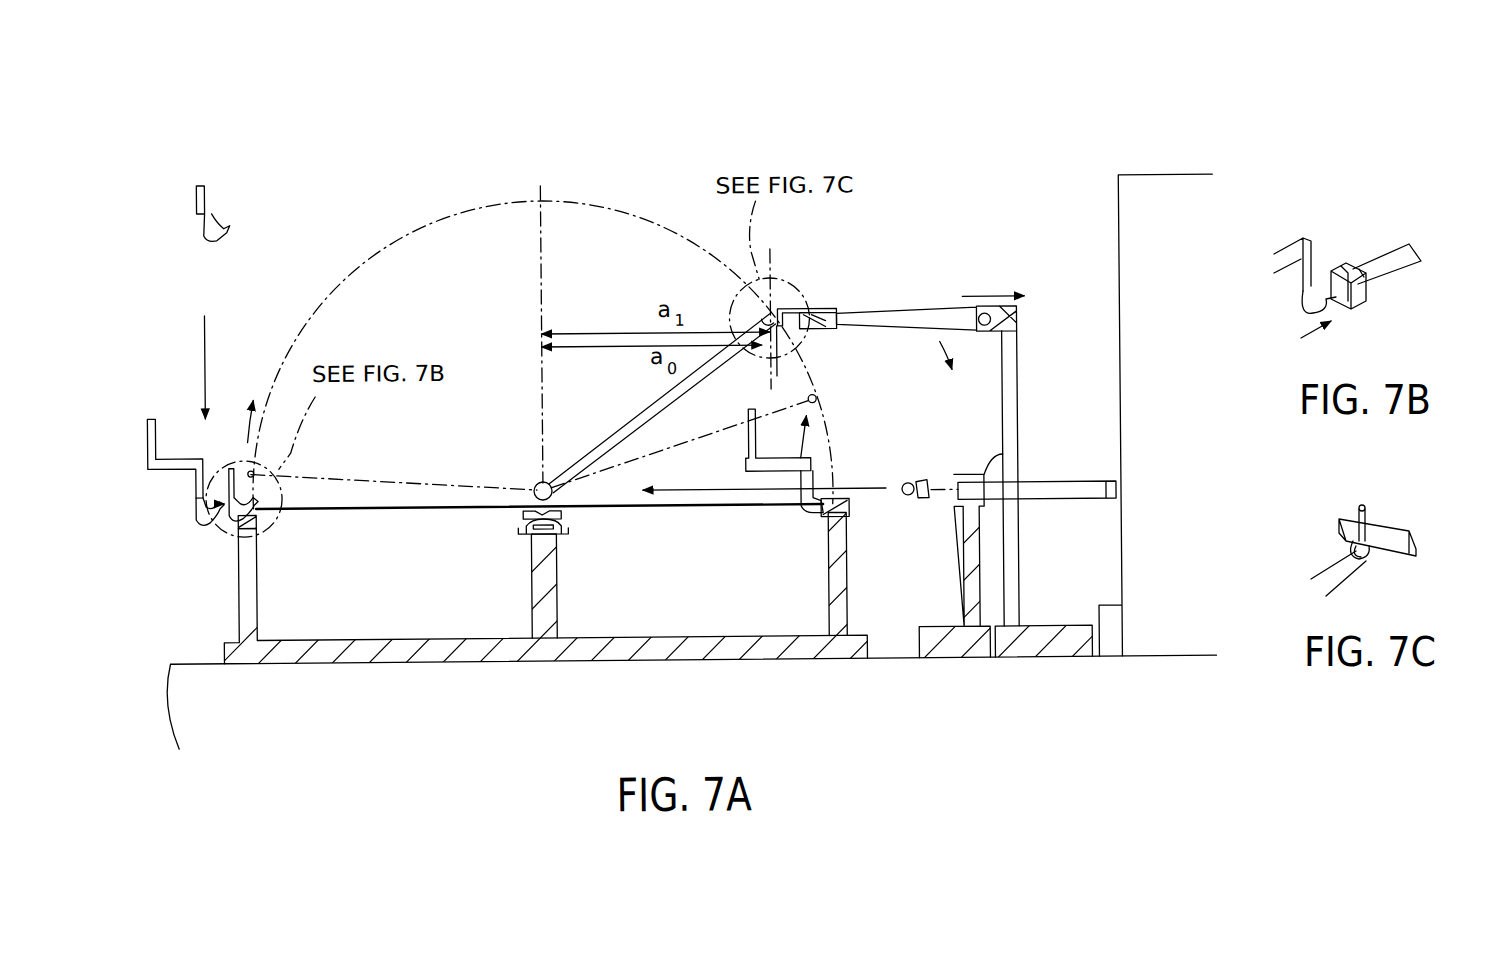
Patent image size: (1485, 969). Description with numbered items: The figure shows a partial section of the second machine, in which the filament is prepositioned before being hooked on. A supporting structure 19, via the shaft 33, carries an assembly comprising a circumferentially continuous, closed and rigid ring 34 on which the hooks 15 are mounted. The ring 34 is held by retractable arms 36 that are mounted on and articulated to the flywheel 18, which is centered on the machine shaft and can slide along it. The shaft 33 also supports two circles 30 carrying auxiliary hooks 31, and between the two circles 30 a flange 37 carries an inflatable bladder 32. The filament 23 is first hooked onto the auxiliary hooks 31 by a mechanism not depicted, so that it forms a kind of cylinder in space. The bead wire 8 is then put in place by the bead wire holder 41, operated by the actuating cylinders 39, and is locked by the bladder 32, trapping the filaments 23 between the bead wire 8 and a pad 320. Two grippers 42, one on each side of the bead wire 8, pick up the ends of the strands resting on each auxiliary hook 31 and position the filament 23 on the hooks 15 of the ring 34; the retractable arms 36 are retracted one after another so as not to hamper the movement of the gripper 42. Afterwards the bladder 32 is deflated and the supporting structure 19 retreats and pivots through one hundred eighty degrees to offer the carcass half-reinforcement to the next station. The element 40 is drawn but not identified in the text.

In FIG. 7A, the bead wire 8 is at (536, 482).
In FIG. 7A, the hooks 15 is at (790, 322).
In FIG. 7C, the hooks 15 is at (1352, 535).
In FIG. 7A, the flywheel 18 is at (1012, 376).
In FIG. 7A, the supporting structure 19 is at (1133, 317).
In FIG. 7A, the filament 23 is at (372, 460).
In FIG. 7B, the filament 23 is at (1375, 250).
In FIG. 7C, the filament 23 is at (1338, 573).
In FIG. 7A, the circles 30 is at (245, 572).
In FIG. 7B, the circles 30 is at (1352, 312).
In FIG. 7A, the auxiliary hooks 31 is at (262, 522).
In FIG. 7B, the auxiliary hooks 31 is at (1345, 266).
In FIG. 7A, the inflatable bladder 32 is at (520, 530).
In FIG. 7A, the shaft 33 is at (440, 705).
In FIG. 7A, the closed and rigid ring 34 is at (816, 312).
In FIG. 7C, the closed and rigid ring 34 is at (1408, 540).
In FIG. 7A, the retractable arms 36 is at (930, 318).
In FIG. 7A, the flange 37 is at (540, 583).
In FIG. 7A, the actuating cylinders 39 is at (1030, 502).
In FIG. 7A, the rail support 40 is at (1014, 472).
In FIG. 7A, the bead wire holder 41 is at (925, 484).
In FIG. 7A, the grippers 42 is at (210, 194).
In FIG. 7B, the grippers 42 is at (1296, 290).
In FIG. 7C, the grippers 42 is at (1362, 560).
In FIG. 7A, the pad 320 is at (560, 513).